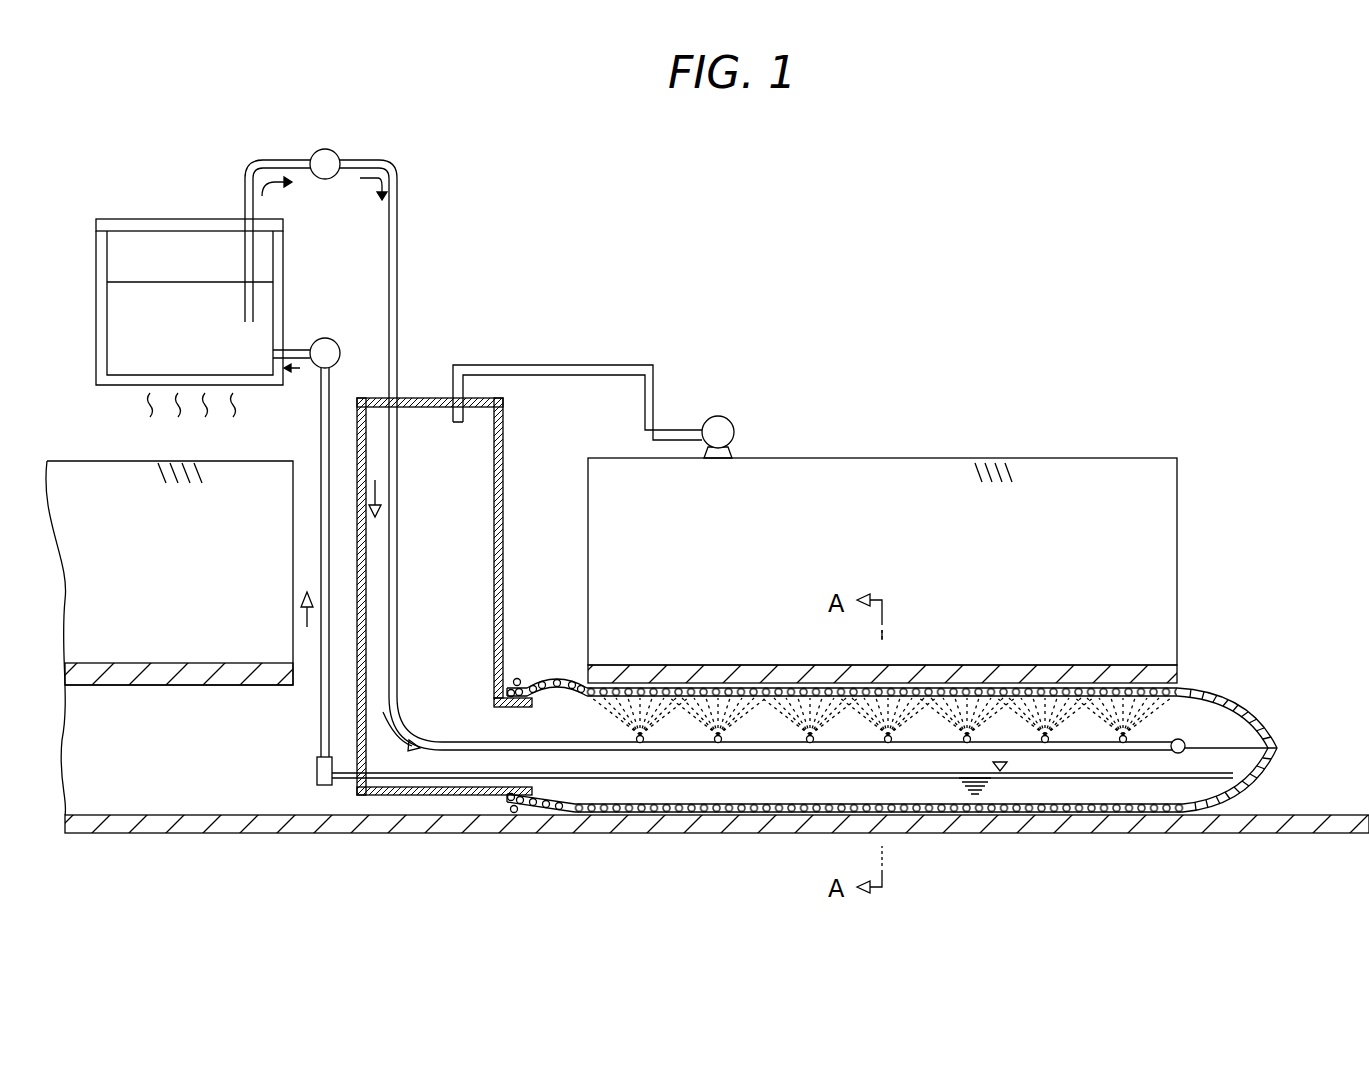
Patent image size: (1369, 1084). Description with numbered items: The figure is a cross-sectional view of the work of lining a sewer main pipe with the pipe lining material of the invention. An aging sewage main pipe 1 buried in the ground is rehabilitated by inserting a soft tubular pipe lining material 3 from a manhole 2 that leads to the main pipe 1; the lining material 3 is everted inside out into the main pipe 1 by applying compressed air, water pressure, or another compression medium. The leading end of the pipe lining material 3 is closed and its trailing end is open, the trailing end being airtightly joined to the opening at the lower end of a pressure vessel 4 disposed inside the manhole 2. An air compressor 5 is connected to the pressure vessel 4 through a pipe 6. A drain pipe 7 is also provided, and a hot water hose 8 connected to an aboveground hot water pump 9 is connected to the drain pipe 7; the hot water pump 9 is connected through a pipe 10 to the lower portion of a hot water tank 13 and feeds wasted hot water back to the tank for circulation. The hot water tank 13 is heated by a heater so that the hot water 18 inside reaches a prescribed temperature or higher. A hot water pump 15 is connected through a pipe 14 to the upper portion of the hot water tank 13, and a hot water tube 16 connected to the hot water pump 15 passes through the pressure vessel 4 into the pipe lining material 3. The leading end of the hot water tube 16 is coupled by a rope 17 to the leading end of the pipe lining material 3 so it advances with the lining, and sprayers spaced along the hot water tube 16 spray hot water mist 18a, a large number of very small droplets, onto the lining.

The sewage main pipe 1 is at (1127, 665).
The manhole 2 is at (588, 538).
The pipe lining material 3 is at (1027, 800).
The pressure vessel 4 is at (420, 395).
The air compressor 5 is at (713, 416).
The pipe 6 is at (620, 368).
The drain pipe 7 is at (317, 783).
The hot water hose 8 is at (321, 735).
The hot water pump 9 is at (328, 340).
The pipe 10 is at (290, 345).
The hot water tank 13 is at (113, 220).
The pipe 14 is at (278, 160).
The hot water pump 15 is at (328, 150).
The hot water tube 16 is at (693, 746).
The rope 17 is at (1213, 747).
The hot water 18 is at (128, 328).
The hot water mist 18a is at (933, 708).